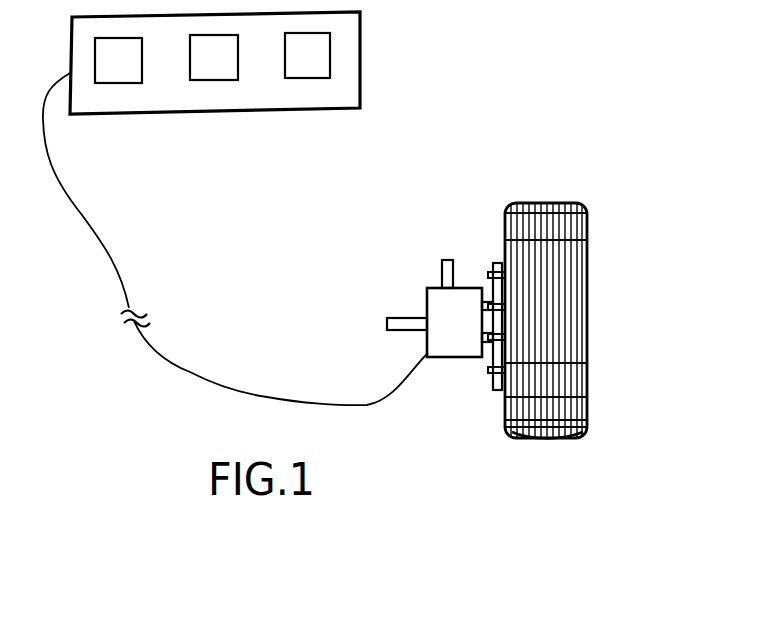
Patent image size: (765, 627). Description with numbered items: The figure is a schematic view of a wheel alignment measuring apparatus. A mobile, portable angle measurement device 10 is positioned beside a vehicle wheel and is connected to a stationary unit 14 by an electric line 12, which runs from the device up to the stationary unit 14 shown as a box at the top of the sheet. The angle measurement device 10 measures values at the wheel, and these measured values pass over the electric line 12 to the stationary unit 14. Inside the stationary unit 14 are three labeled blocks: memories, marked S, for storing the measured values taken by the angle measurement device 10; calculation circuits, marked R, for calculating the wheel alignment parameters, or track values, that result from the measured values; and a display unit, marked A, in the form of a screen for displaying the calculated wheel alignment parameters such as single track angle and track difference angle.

The angle measurement device 10 is at (405, 272).
The electric line 12 is at (84, 214).
The stationary unit 14 is at (360, 68).